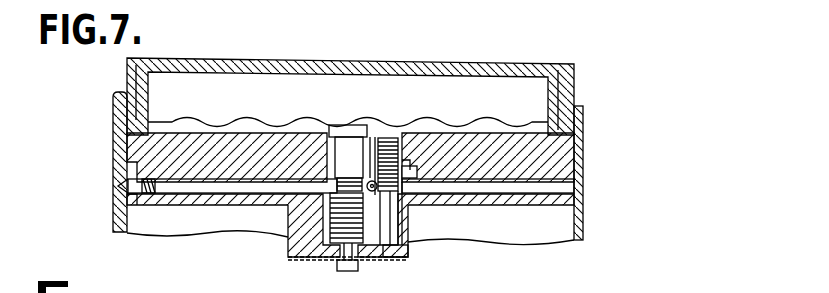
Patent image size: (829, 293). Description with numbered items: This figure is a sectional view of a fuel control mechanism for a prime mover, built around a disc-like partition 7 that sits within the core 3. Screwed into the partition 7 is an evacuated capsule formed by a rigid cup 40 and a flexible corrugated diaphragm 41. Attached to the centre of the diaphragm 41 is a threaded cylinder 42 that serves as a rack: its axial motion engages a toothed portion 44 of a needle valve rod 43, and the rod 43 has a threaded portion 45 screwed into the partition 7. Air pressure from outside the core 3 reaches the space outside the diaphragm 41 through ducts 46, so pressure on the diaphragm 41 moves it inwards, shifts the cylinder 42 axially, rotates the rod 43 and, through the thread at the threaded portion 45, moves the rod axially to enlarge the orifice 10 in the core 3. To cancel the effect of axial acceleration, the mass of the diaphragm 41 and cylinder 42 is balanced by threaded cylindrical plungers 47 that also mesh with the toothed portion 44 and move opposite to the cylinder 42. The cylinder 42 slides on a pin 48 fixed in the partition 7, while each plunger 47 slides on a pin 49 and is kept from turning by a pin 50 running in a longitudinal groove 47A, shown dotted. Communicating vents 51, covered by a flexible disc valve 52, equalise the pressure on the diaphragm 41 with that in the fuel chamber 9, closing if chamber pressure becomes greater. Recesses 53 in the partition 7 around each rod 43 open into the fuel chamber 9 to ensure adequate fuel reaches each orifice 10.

The core 3 is at (113, 138).
The partition 7 is at (574, 74).
The fuel chamber 9 is at (350, 228).
The orifice 10 is at (117, 184).
The rigid cup 40 is at (480, 63).
The flexible corrugated diaphragm 41 is at (466, 120).
The threaded cylinder 42 is at (343, 152).
The needle valve rod 43 is at (245, 187).
The toothed portion 44 is at (366, 177).
The threaded portion 45 is at (150, 195).
The duct 46 is at (510, 186).
The threaded cylindrical plunger 47 is at (388, 137).
The longitudinal groove 47A is at (396, 132).
The pin 48 is at (366, 262).
The pin 49 is at (391, 223).
The pin 50 is at (410, 168).
The communicating vent 51 is at (395, 258).
The flexible disc valve 52 is at (318, 258).
The recess 53 is at (121, 198).